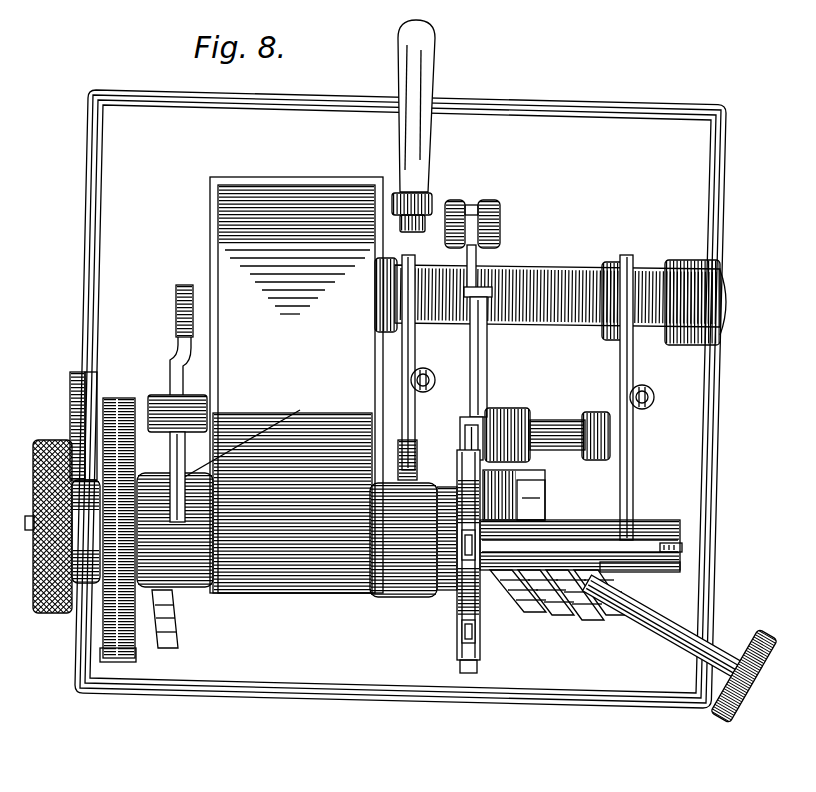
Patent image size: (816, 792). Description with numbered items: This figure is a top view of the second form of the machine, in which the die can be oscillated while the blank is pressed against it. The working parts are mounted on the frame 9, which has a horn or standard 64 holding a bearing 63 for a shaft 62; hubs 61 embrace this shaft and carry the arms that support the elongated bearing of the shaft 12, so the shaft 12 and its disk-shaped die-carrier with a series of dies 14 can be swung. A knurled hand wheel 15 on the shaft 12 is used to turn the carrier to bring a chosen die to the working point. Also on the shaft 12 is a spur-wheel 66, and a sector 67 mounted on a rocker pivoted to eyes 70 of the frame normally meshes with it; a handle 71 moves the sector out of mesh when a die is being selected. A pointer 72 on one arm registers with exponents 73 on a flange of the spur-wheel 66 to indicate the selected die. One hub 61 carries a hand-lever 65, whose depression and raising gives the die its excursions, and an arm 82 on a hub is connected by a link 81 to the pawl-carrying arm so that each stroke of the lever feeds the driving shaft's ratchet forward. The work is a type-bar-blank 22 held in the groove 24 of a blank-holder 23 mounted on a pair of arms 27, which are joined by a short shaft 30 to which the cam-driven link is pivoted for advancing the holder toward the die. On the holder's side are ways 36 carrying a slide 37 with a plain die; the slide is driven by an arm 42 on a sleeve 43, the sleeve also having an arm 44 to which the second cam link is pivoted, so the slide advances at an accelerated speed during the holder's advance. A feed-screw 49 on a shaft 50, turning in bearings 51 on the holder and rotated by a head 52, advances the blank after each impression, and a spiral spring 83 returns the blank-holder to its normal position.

The frame 9 is at (415, 692).
The shaft 12 is at (490, 530).
The dies 14 is at (456, 636).
The knurled hand wheel 15 is at (56, 614).
The type-bar-blank 22 is at (650, 528).
The blank-holder 23 is at (645, 574).
The groove 24 is at (683, 548).
The arms 27 is at (402, 388).
The short shaft 30 is at (553, 428).
The ways 36 is at (399, 450).
The slide 37 is at (522, 503).
The arm 42 is at (488, 335).
The sleeve 43 is at (556, 282).
The arm 44 is at (480, 266).
The feed-screw 49 is at (530, 618).
The shaft 50 is at (668, 637).
The bearings 51 is at (575, 622).
The head 52 is at (735, 715).
The hubs 61 is at (195, 590).
The shaft 62 is at (437, 543).
The bearing 63 is at (272, 594).
The horn or standard 64 is at (296, 385).
The hand-lever 65 is at (436, 196).
The spur-wheel 66 is at (120, 660).
The sector 67 is at (102, 655).
The eyes 70 is at (97, 455).
The handle 71 is at (27, 515).
The pointer 72 is at (170, 648).
The exponents 73 is at (248, 438).
The link 81 is at (176, 363).
The arm 82 is at (170, 447).
The spiral spring 83 is at (426, 371).